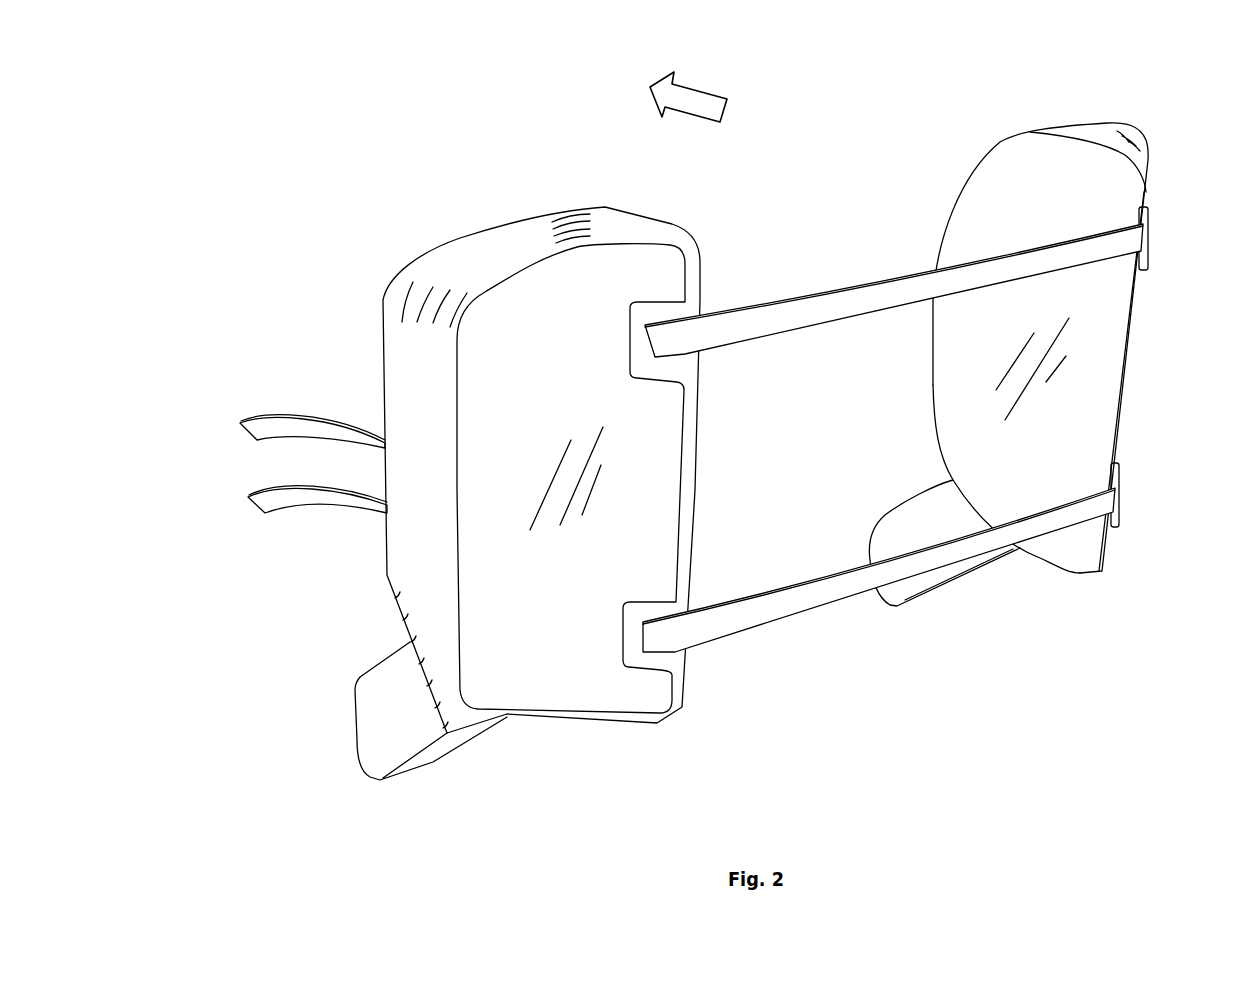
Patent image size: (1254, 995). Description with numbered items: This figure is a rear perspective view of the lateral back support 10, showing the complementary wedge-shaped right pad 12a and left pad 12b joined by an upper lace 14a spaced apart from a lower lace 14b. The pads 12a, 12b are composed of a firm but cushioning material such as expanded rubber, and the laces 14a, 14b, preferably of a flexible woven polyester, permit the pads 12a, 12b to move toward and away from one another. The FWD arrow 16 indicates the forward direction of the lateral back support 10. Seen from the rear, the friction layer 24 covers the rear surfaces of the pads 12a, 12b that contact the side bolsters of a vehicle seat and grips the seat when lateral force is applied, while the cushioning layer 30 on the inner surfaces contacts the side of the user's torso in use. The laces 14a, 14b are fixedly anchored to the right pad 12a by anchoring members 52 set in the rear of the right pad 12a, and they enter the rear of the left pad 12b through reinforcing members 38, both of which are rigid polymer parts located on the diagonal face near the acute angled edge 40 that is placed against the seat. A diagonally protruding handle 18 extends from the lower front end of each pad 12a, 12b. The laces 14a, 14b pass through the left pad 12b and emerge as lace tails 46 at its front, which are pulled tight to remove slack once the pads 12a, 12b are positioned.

The lateral back support 10 is at (716, 417).
The right pad 12a is at (1069, 315).
The left pad 12b is at (702, 453).
The upper lace 14a is at (905, 288).
The lower lace 14b is at (793, 603).
The FWD arrow 16 is at (695, 95).
The handle 18 is at (370, 720).
The friction layer 24 is at (1125, 355).
The cushioning layer 30 is at (980, 200).
The reinforcing member 38 is at (680, 310).
The acute angled edge 40 is at (692, 505).
The lace tails 46 is at (258, 432).
The anchoring member 52 is at (1143, 222).